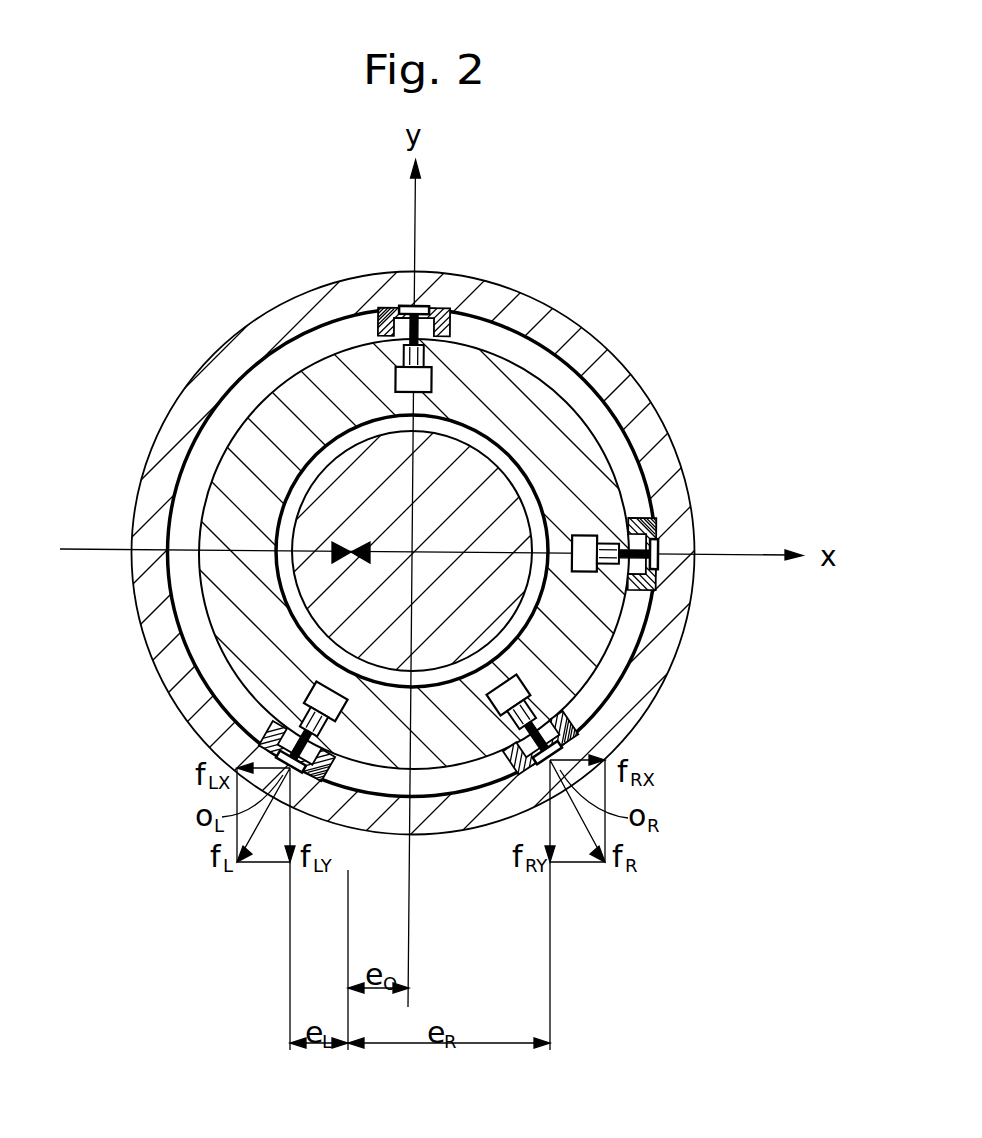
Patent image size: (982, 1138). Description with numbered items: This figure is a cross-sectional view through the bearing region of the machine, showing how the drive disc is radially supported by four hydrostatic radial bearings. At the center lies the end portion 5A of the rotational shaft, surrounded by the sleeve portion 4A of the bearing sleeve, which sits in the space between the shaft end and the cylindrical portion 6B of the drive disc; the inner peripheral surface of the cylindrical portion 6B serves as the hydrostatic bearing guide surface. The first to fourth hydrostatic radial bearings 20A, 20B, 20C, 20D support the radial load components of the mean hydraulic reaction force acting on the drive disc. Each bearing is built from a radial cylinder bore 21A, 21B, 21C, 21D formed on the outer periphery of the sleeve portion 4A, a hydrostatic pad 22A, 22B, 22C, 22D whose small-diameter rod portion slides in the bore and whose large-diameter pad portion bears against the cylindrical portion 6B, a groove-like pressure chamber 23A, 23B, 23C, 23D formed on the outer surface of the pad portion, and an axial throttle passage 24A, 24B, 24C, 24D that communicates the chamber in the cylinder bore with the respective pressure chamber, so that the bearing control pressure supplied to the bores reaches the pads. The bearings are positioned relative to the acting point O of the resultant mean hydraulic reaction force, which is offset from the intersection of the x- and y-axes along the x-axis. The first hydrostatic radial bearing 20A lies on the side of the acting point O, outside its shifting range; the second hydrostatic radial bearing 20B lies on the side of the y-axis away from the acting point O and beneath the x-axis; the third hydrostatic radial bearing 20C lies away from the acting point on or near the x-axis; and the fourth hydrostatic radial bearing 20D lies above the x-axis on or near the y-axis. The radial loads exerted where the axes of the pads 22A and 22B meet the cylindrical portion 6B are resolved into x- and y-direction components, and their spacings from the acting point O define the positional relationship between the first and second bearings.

The sleeve portion 4A is at (227, 612).
The end portion 5A is at (493, 482).
The cylindrical portion 6B is at (227, 365).
The acting point O is at (349, 548).
The first hydrostatic radial bearing 20A is at (236, 795).
The second hydrostatic radial bearing 20B is at (602, 810).
The third hydrostatic radial bearing 20C is at (678, 534).
The fourth hydrostatic radial bearing 20D is at (409, 300).
The radial cylinder bore 21A is at (306, 700).
The radial cylinder bore 21B is at (490, 722).
The radial cylinder bore 21C is at (600, 574).
The radial cylinder bore 21D is at (435, 380).
The hydrostatic pad 22A is at (283, 724).
The hydrostatic pad 22B is at (520, 728).
The hydrostatic pad 22C is at (616, 568).
The hydrostatic pad 22D is at (440, 352).
The pressure chamber 23A is at (302, 776).
The pressure chamber 23B is at (552, 758).
The pressure chamber 23C is at (656, 543).
The pressure chamber 23D is at (406, 306).
The axial throttle passage 24A is at (273, 752).
The axial throttle passage 24B is at (556, 742).
The axial throttle passage 24C is at (650, 584).
The axial throttle passage 24D is at (432, 322).